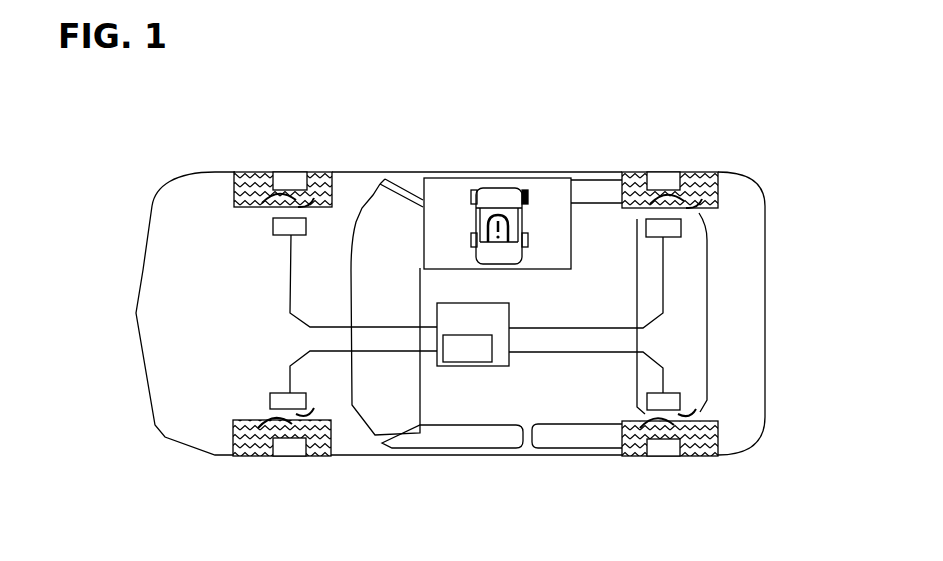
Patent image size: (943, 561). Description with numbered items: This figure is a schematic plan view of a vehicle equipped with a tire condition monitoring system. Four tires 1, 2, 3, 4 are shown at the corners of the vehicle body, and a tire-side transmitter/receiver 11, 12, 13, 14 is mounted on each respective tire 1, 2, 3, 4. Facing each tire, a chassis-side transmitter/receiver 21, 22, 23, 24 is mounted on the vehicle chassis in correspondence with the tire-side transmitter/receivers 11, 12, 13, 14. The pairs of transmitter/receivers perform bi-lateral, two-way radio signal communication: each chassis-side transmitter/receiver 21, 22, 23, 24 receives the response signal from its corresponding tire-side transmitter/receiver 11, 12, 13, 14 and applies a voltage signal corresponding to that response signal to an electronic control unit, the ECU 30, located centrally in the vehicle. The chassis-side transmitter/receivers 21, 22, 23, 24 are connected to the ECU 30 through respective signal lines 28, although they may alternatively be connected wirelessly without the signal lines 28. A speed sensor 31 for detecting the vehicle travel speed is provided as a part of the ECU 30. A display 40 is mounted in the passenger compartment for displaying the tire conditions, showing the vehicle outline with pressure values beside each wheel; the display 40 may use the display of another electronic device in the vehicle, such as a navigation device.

The tire 1 is at (257, 172).
The tire 2 is at (707, 172).
The tire 3 is at (248, 456).
The tire 4 is at (700, 456).
The tire-side transmitter/receiver 11 is at (293, 172).
The tire-side transmitter/receiver 12 is at (665, 172).
The tire-side transmitter/receiver 13 is at (287, 456).
The tire-side transmitter/receiver 14 is at (655, 456).
The chassis-side transmitter/receiver 21 is at (273, 227).
The chassis-side transmitter/receiver 22 is at (681, 224).
The chassis-side transmitter/receiver 23 is at (270, 401).
The chassis-side transmitter/receiver 24 is at (680, 398).
The signal lines 28 is at (333, 328).
The electronic control unit (ECU) 30 is at (480, 366).
The speed sensor 31 is at (460, 366).
The display 40 is at (571, 225).